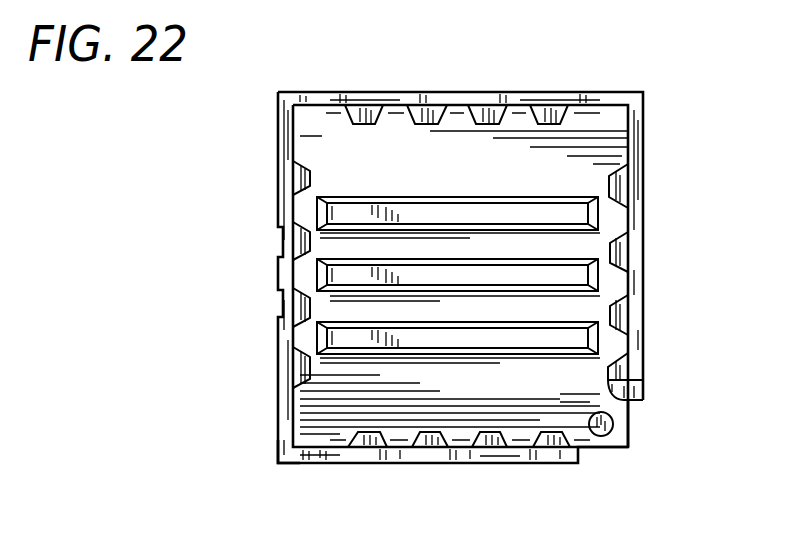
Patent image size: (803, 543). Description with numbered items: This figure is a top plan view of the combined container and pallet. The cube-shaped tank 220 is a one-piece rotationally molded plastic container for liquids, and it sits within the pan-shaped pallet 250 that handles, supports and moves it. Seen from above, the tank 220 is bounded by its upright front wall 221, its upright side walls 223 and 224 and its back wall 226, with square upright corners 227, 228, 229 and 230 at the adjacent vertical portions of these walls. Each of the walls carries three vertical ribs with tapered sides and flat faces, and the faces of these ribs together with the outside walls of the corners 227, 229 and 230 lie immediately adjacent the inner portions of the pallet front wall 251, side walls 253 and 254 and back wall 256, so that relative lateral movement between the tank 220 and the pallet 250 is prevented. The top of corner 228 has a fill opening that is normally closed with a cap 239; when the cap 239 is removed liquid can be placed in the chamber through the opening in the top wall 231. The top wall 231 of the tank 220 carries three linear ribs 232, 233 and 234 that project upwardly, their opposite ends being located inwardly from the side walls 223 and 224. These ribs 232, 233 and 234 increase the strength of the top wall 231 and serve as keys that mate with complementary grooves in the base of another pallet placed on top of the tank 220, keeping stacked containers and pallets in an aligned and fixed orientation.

The tank 220 is at (676, 87).
The front wall 221 is at (462, 449).
The side wall 223 is at (310, 300).
The side wall 224 is at (643, 375).
The back wall 226 is at (515, 107).
The upright corner 227 is at (293, 433).
The upright corner 228 is at (628, 422).
The upright corner 229 is at (630, 143).
The upright corner 230 is at (293, 134).
The top wall 231 is at (358, 170).
The linear rib 232 is at (575, 342).
The linear rib 233 is at (575, 282).
The linear rib 234 is at (575, 219).
The cap 239 is at (601, 431).
The pallet 250 is at (274, 462).
The front wall 251 is at (367, 468).
The side wall 253 is at (287, 364).
The side wall 254 is at (645, 172).
The back wall 256 is at (440, 92).